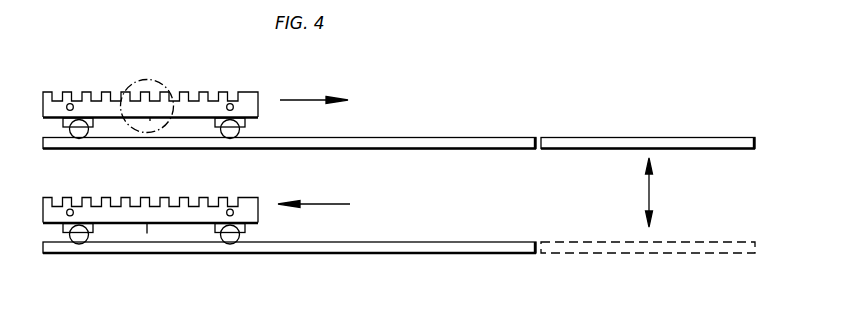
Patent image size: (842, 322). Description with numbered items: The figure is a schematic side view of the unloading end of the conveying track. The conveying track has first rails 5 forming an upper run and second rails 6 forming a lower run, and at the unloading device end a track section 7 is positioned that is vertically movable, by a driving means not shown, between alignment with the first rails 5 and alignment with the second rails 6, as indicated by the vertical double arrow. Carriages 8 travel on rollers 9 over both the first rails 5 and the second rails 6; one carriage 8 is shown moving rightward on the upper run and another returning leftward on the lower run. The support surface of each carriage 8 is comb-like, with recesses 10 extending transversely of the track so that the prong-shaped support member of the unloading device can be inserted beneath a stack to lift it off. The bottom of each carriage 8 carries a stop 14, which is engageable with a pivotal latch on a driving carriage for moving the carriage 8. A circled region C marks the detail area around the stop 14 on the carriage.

The first rails 5 is at (478, 146).
The second rails 6 is at (498, 251).
The track section 7 is at (670, 146).
The carriage 8 is at (163, 107).
The rollers 9 is at (78, 128).
The recesses 10 is at (58, 98).
The stop 14 is at (150, 118).
The circle region C is at (147, 95).